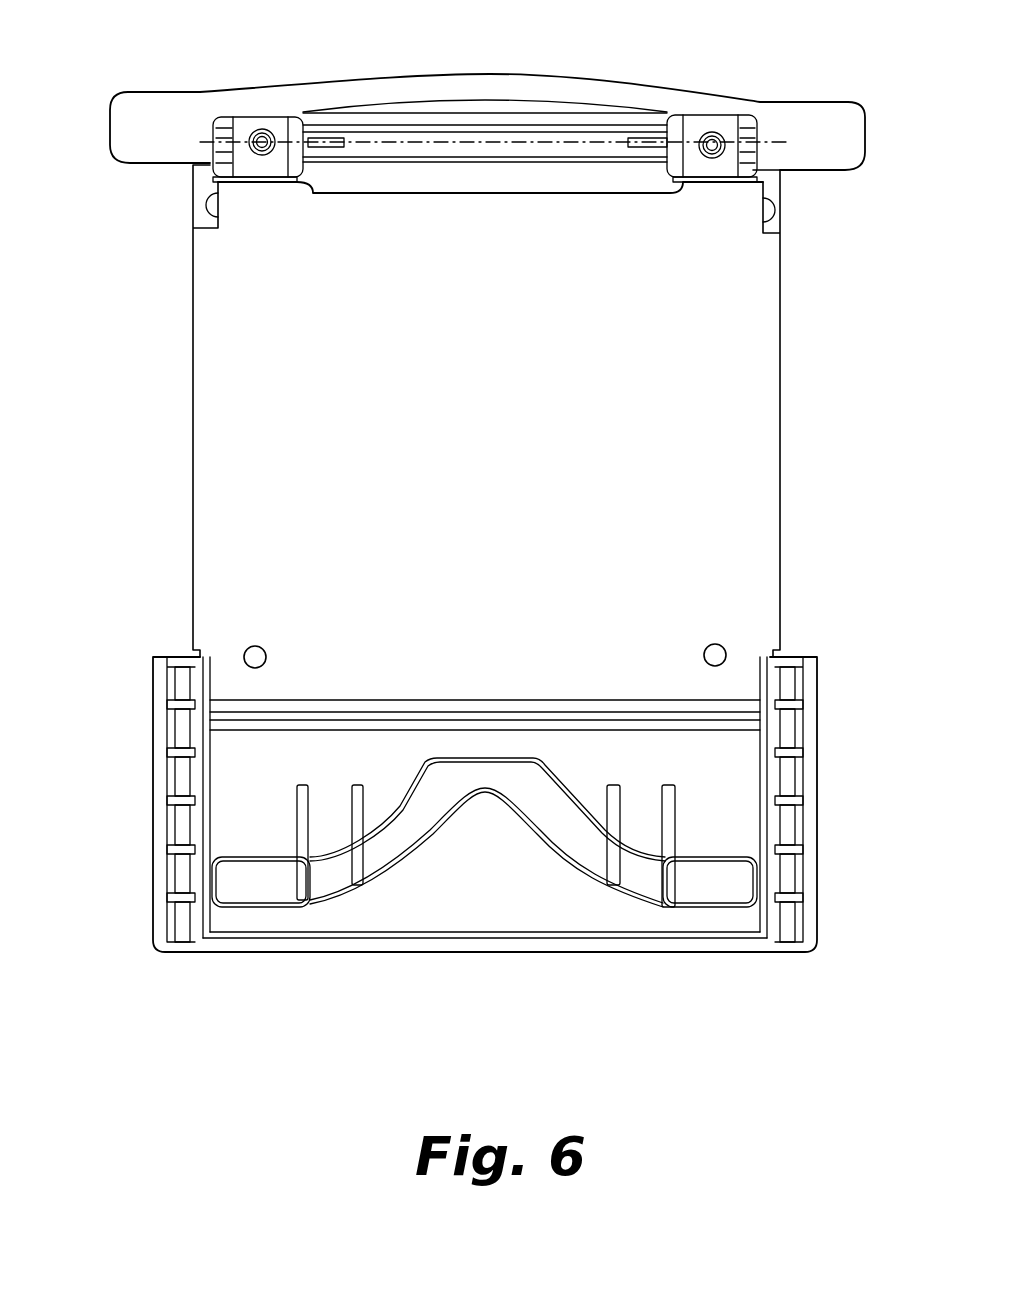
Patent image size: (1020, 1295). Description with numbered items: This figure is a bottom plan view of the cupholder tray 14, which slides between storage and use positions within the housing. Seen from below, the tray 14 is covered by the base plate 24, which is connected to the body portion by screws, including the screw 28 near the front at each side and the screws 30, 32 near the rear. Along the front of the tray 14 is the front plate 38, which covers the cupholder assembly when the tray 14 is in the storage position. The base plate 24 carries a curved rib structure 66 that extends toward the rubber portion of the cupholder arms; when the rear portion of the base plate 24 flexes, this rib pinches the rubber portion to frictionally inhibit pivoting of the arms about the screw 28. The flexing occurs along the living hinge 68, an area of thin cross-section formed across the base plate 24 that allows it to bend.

The tray 14 is at (286, 976).
The base plate 24 is at (220, 458).
The screw 28 is at (262, 142).
The screw 30 is at (728, 652).
The screw 32 is at (245, 650).
The front plate 38 is at (387, 90).
The curved rib structure 66 is at (557, 848).
The living hinge 68 is at (645, 720).